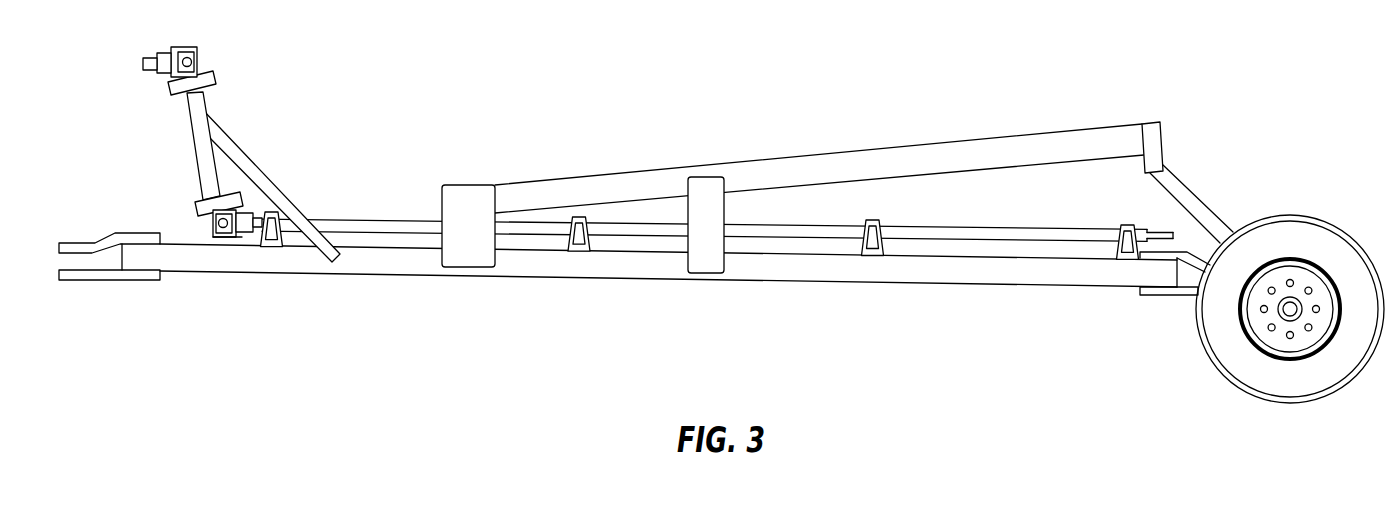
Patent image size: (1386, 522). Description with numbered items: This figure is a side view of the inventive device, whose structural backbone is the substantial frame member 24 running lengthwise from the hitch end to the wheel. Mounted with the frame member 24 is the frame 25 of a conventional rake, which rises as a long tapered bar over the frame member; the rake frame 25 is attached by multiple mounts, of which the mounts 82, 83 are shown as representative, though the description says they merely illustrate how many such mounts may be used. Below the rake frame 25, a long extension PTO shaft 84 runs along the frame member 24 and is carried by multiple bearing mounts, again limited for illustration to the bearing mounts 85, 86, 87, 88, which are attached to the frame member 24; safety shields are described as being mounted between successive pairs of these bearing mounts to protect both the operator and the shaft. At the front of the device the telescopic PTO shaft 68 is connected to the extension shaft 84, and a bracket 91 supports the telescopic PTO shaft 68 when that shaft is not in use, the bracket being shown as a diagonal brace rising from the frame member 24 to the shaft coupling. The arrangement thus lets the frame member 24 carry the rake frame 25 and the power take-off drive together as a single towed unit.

The frame member 24 is at (192, 263).
The frame 25 is at (819, 154).
The telescopic PTO shaft 68 is at (213, 80).
The mount 82 is at (473, 258).
The mount 83 is at (707, 263).
The longitudinal actuating rod 84 is at (338, 219).
The bearing mount 85 is at (273, 238).
The bearing mount 86 is at (578, 238).
The bearing mount 87 is at (870, 248).
The bearing mount 88 is at (1095, 288).
The bracket 91 is at (257, 172).